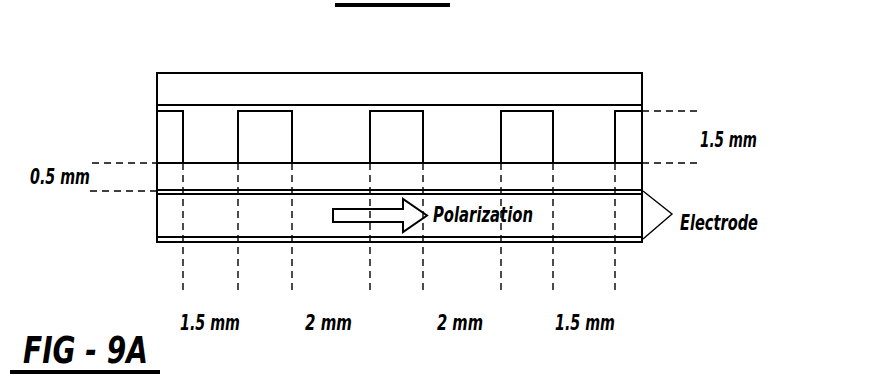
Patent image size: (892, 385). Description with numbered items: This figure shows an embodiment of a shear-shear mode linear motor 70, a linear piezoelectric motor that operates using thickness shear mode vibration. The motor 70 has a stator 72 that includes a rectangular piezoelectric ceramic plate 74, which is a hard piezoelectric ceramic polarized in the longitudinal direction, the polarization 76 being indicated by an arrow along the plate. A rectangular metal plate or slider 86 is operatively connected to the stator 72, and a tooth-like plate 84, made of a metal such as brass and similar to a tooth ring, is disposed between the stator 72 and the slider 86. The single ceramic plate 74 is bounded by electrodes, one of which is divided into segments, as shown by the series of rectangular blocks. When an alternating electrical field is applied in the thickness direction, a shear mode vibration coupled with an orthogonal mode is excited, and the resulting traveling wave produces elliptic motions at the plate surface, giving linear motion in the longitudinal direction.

The shear-shear mode linear motor 70 is at (738, 78).
The stator 72 is at (156, 134).
The rectangular piezoelectric ceramic plate 74 is at (157, 214).
The polarization 76 is at (387, 222).
The tooth-like plate 84 is at (500, 131).
The slider 86 is at (634, 87).